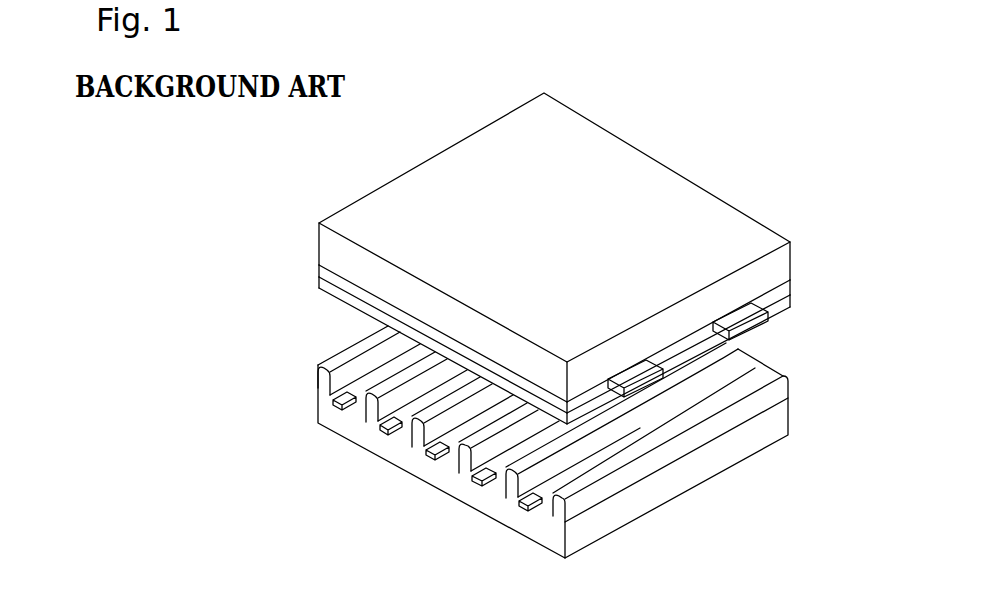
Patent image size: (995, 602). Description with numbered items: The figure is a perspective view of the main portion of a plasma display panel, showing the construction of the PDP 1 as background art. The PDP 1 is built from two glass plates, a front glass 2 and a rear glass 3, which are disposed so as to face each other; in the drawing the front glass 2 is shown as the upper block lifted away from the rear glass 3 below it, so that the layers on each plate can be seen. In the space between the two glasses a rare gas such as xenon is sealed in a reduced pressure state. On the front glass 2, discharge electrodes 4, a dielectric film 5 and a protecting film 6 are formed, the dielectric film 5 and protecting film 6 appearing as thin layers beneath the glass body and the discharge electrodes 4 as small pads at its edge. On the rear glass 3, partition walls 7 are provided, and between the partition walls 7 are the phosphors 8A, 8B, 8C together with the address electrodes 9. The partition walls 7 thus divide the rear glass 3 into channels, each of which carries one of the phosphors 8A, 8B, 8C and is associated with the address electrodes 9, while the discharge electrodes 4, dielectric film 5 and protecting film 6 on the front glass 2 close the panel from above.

The PDP 1 is at (838, 257).
The front glass 2 is at (430, 167).
The rear glass 3 is at (680, 482).
The discharge electrodes 4 is at (746, 314).
The dielectric film 5 is at (319, 270).
The protecting film 6 is at (319, 285).
The partition walls 7 is at (705, 435).
The phosphor 8A is at (356, 437).
The phosphor 8B is at (403, 446).
The phosphor 8C is at (457, 470).
The address electrodes 9 is at (520, 487).